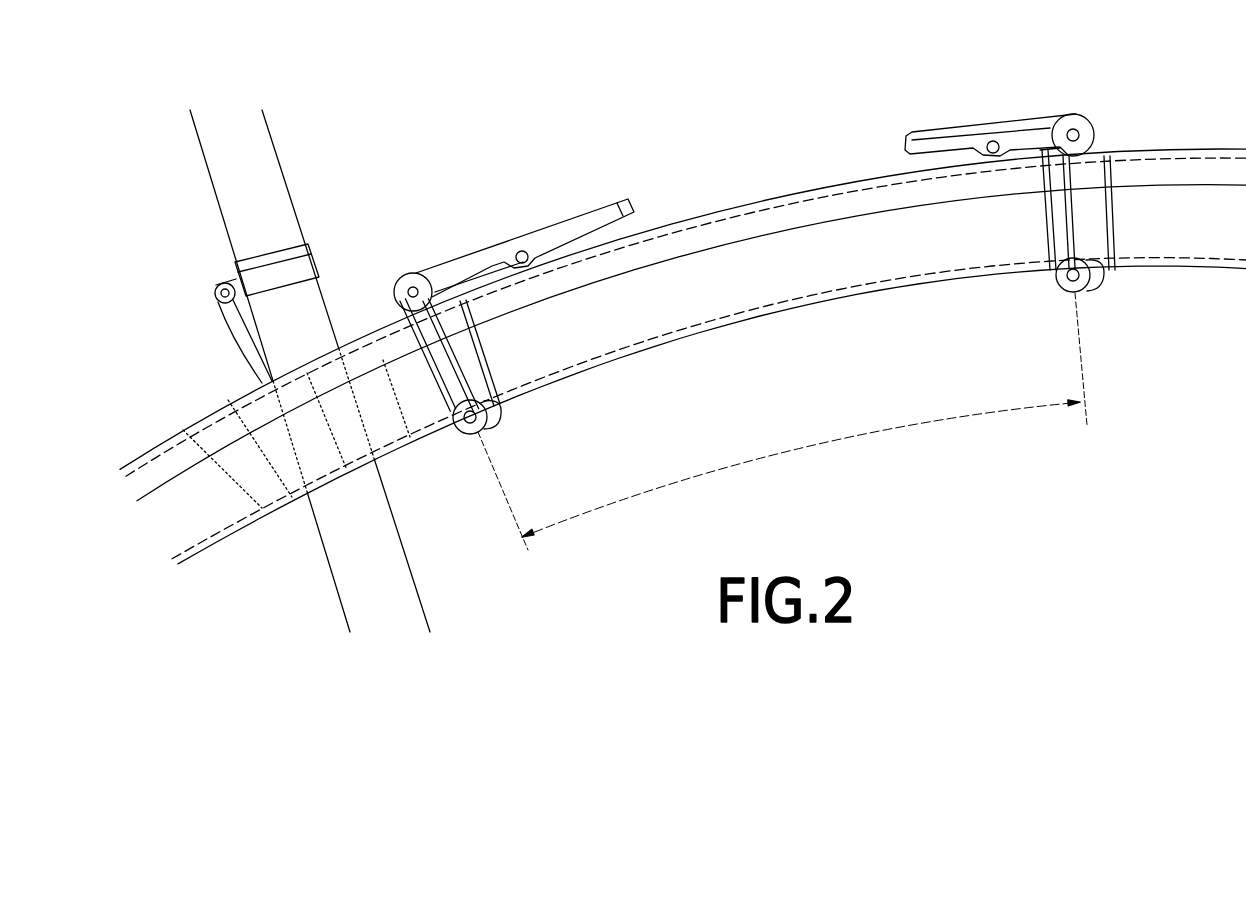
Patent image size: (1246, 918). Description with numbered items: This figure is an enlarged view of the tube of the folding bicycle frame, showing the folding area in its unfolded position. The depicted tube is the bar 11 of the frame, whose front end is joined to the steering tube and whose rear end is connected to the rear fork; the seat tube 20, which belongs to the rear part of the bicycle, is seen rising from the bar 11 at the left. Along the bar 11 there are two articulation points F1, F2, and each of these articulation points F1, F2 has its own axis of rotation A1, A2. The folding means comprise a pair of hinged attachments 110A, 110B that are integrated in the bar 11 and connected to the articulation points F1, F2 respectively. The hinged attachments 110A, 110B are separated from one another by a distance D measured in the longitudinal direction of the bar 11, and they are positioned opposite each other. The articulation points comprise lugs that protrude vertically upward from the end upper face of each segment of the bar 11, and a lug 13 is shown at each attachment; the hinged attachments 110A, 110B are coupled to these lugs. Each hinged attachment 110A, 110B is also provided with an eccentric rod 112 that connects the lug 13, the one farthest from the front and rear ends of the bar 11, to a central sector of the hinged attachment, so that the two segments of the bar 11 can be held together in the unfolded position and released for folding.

The bar 11 is at (683, 309).
The seat tube 20 is at (272, 314).
The lug 13 is at (442, 270).
The hinged attachment 110A is at (482, 243).
The hinged attachment 110B is at (940, 140).
The eccentric rod 112 is at (498, 263).
The articulation point F1 is at (402, 243).
The articulation point F2 is at (1082, 104).
The axis of rotation A1 is at (493, 423).
The axis of rotation A2 is at (1062, 278).
The distance D is at (782, 421).